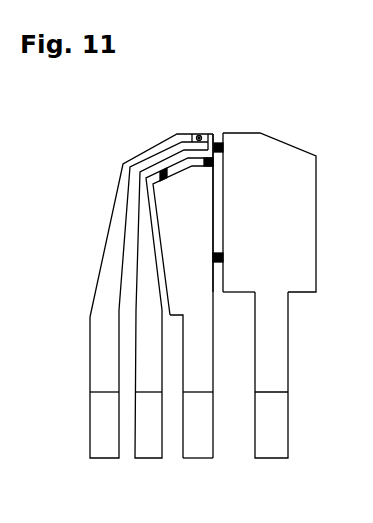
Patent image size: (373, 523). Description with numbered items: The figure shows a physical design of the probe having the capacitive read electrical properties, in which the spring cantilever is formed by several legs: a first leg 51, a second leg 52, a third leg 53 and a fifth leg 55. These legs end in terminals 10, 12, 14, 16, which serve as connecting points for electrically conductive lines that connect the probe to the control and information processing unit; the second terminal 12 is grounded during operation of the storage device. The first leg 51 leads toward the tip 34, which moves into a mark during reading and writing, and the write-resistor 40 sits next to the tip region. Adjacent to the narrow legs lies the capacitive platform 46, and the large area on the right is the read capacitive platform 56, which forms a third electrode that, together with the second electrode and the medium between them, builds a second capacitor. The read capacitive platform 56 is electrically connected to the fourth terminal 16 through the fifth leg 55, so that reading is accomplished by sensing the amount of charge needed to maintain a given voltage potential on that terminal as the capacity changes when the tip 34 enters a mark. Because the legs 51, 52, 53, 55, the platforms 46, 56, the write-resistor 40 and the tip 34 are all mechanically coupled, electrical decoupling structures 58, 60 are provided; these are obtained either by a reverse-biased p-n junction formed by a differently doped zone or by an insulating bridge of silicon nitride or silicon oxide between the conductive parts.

The first terminal 10 is at (105, 455).
The second terminal 12 is at (145, 455).
The third terminal 14 is at (198, 455).
The fourth terminal 16 is at (272, 455).
The tip 34 is at (199, 136).
The write-resistor 40 is at (219, 134).
The capacitive platform 46 is at (200, 197).
The first leg 51 is at (105, 268).
The second leg 52 is at (145, 352).
The third leg 53 is at (208, 344).
The fifth leg 55 is at (283, 324).
The read capacitive platform 56 is at (307, 179).
The electrical decoupling structure 58 is at (161, 170).
The electrical decoupling structure 60 is at (224, 139).